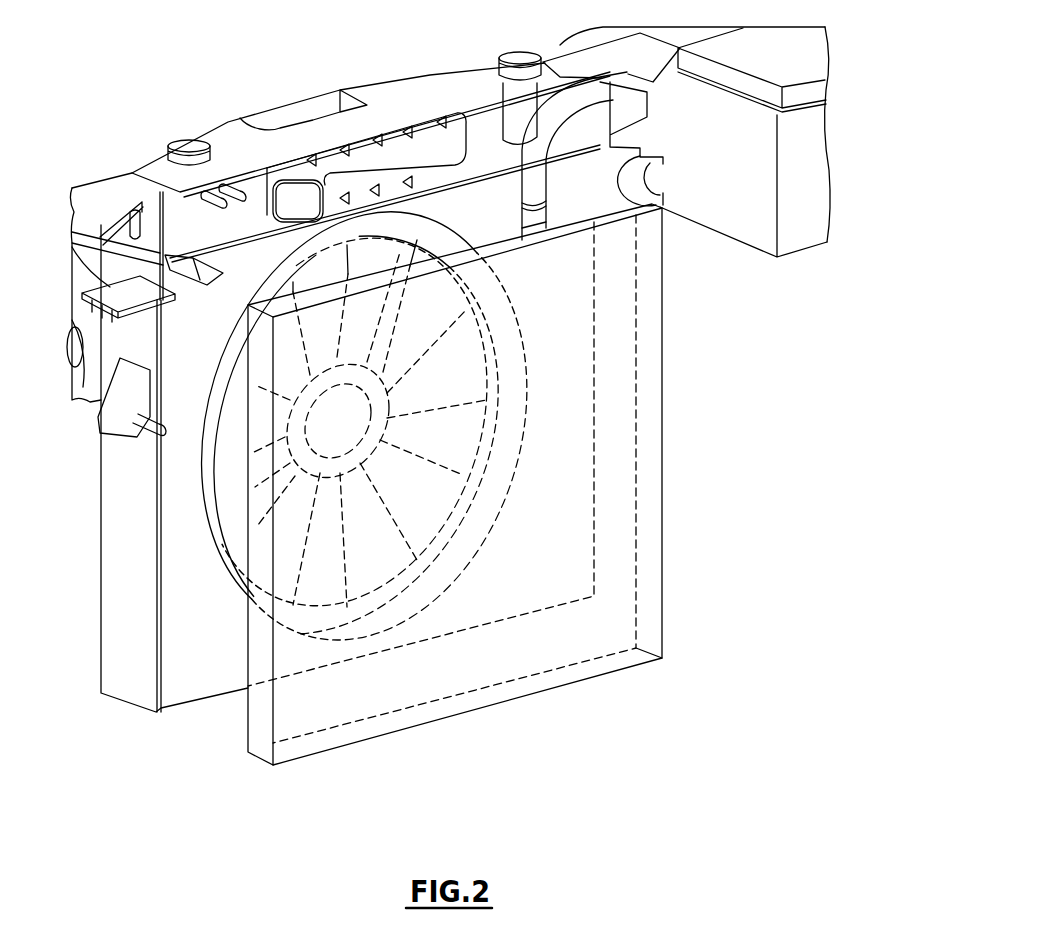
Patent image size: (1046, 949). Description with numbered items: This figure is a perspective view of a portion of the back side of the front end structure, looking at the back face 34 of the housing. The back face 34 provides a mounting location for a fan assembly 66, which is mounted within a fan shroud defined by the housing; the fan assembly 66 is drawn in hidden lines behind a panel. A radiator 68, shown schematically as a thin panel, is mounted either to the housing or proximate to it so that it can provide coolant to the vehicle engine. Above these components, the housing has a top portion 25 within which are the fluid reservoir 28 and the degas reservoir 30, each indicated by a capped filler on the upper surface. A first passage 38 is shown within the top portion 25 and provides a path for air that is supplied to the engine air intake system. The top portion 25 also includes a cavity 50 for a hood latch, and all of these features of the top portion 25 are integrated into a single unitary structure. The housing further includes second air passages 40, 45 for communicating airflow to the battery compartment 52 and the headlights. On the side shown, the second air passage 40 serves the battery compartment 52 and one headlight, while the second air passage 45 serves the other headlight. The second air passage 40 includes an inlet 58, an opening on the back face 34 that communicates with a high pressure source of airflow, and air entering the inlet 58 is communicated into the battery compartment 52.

The top portion 25 is at (217, 123).
The fluid reservoir 28 is at (493, 157).
The degas reservoir 30 is at (160, 175).
The back face 34 is at (187, 460).
The first passage 38 is at (420, 140).
The second air passage 40 is at (537, 183).
The second air passage 45 is at (193, 277).
The cavity 50 is at (293, 112).
The battery compartment 52 is at (793, 156).
The inlet 58 is at (541, 213).
The fan assembly 66 is at (214, 506).
The radiator 68 is at (647, 350).